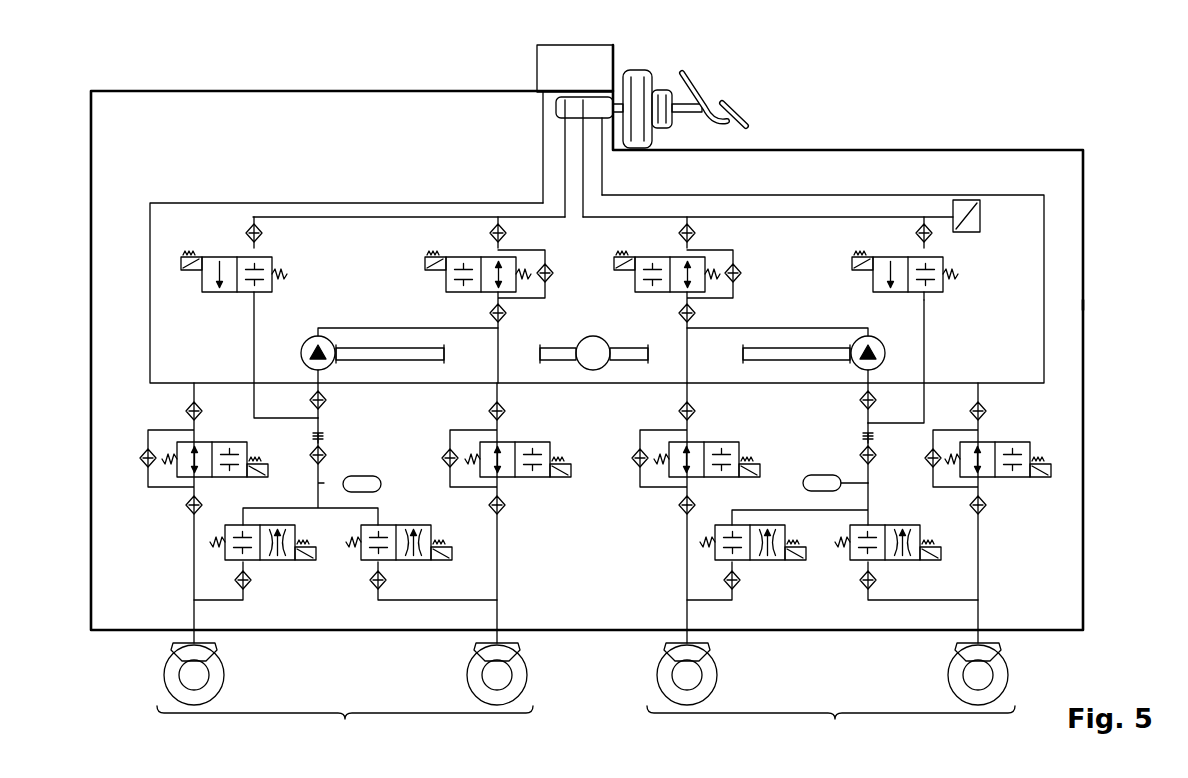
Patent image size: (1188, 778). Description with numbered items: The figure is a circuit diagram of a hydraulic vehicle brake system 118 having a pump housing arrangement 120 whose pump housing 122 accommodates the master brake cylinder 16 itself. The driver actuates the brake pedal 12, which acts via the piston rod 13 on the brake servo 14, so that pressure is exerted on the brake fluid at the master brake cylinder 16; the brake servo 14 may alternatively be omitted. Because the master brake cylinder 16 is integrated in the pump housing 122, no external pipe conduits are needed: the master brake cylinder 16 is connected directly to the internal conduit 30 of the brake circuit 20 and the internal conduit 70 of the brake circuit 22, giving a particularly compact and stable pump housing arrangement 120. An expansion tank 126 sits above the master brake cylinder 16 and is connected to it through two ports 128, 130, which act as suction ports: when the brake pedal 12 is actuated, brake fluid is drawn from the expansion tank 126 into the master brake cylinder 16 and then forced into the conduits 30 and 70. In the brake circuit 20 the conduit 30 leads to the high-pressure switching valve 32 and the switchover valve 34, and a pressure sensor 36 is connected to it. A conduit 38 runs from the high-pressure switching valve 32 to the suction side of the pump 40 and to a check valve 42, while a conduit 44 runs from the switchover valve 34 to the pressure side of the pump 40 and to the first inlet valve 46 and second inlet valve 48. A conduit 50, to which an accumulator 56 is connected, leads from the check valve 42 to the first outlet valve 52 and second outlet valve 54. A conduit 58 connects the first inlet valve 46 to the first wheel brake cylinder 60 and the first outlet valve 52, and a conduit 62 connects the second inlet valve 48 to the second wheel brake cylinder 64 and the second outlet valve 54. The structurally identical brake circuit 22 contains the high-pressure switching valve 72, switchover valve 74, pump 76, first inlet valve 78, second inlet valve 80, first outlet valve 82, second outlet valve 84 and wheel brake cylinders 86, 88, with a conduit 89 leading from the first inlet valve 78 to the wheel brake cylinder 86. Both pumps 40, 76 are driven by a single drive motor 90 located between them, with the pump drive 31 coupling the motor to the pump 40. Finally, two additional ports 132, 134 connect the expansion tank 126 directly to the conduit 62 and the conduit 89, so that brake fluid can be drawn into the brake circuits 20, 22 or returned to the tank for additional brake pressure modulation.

The brake pedal 12 is at (740, 106).
The piston rod 13 is at (690, 92).
The brake servo 14 is at (635, 69).
The master brake cylinder 16 is at (555, 108).
The brake circuit 20 is at (831, 729).
The brake circuit 22 is at (345, 729).
The conduit 30 is at (808, 218).
The pump drive 31 is at (856, 372).
The high-pressure switching valve 32 is at (898, 256).
The switchover valve 34 is at (668, 256).
The pressure sensor 36 is at (980, 217).
The conduit 38 is at (925, 322).
The pump 40 is at (888, 350).
The check valve 42 is at (877, 461).
The conduit 44 is at (680, 312).
The first inlet valve 46 is at (729, 441).
The second inlet valve 48 is at (1010, 441).
The conduit 50 is at (872, 514).
The first outlet valve 52 is at (779, 564).
The second outlet valve 54 is at (912, 563).
The accumulator 56 is at (799, 476).
The conduit 58 is at (686, 553).
The first wheel brake cylinder 60 is at (715, 656).
The conduit 62 is at (979, 553).
The second wheel brake cylinder 64 is at (1006, 656).
The conduit 70 is at (380, 218).
The high-pressure switching valve 72 is at (232, 293).
The switchover valve 74 is at (456, 256).
The pump 76 is at (301, 352).
The first inlet valve 78 is at (222, 441).
The second inlet valve 80 is at (541, 441).
The first outlet valve 82 is at (290, 564).
The second outlet valve 84 is at (411, 524).
The wheel brake cylinder 86 is at (222, 656).
The wheel brake cylinder 88 is at (525, 656).
The conduit 89 is at (193, 553).
The drive motor 90 is at (593, 335).
The hydraulic vehicle brake system 118 is at (115, 84).
The pump housing arrangement 120 is at (284, 122).
The pump housing 122 is at (1011, 149).
The expansion tank 126 is at (536, 50).
The port 128 is at (582, 105).
The port 130 is at (563, 97).
The additional port 132 is at (603, 170).
The additional port 134 is at (542, 172).